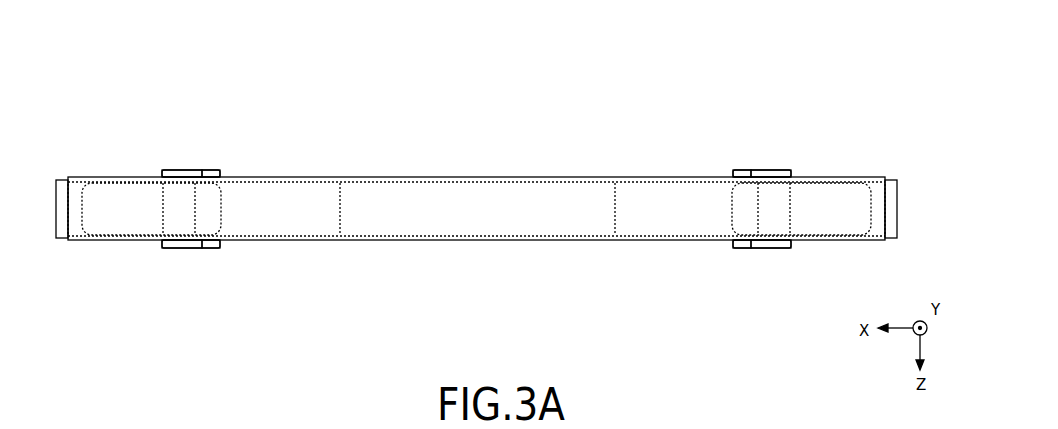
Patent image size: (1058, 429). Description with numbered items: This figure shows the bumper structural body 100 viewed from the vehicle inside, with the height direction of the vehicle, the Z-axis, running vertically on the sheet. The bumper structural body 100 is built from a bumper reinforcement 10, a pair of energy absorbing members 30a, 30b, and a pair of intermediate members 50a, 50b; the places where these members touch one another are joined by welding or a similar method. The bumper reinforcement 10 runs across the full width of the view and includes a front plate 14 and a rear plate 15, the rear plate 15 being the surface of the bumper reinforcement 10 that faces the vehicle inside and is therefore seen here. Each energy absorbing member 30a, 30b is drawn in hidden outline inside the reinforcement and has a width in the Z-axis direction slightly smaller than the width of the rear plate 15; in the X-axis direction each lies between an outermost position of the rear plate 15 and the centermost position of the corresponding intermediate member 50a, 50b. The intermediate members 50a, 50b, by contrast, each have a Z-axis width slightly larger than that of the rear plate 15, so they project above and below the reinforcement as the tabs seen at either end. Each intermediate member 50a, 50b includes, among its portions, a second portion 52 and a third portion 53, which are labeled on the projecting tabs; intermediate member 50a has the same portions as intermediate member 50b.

The bumper structural body 100 is at (664, 68).
The bumper reinforcement 10 is at (435, 124).
The front plate 14 is at (553, 208).
The rear plate 15 is at (830, 178).
The energy absorbing member 30a is at (111, 241).
The energy absorbing member 30b is at (842, 241).
The intermediate member 50a is at (188, 136).
The intermediate member 50b is at (762, 136).
The second portion 52 is at (165, 174).
The third portion 53 is at (213, 172).